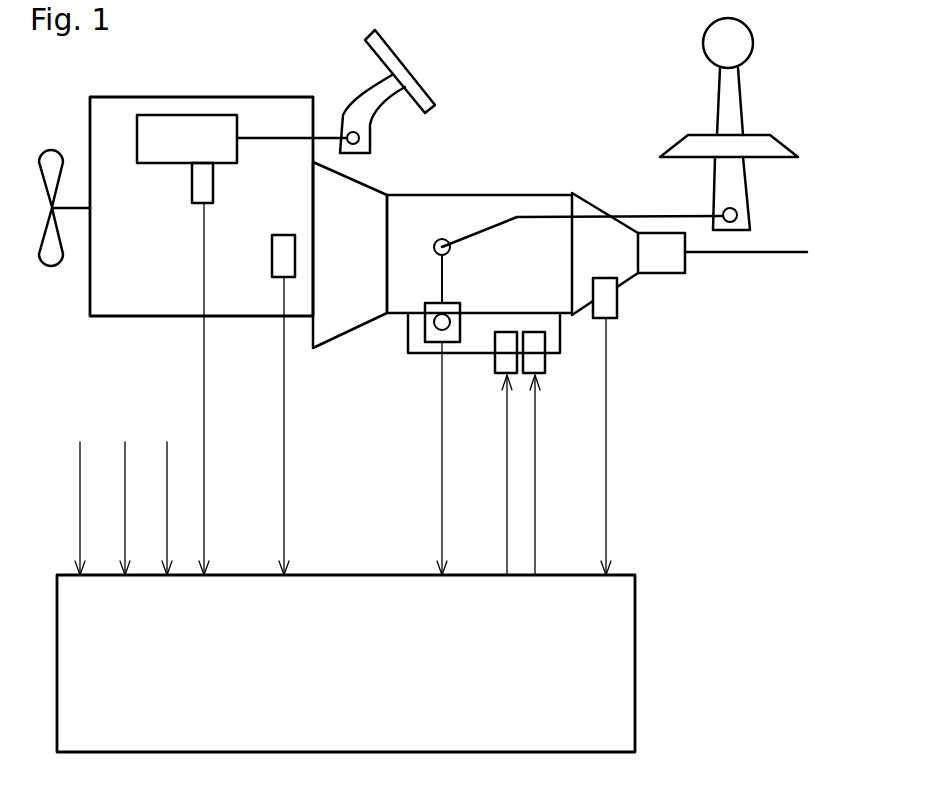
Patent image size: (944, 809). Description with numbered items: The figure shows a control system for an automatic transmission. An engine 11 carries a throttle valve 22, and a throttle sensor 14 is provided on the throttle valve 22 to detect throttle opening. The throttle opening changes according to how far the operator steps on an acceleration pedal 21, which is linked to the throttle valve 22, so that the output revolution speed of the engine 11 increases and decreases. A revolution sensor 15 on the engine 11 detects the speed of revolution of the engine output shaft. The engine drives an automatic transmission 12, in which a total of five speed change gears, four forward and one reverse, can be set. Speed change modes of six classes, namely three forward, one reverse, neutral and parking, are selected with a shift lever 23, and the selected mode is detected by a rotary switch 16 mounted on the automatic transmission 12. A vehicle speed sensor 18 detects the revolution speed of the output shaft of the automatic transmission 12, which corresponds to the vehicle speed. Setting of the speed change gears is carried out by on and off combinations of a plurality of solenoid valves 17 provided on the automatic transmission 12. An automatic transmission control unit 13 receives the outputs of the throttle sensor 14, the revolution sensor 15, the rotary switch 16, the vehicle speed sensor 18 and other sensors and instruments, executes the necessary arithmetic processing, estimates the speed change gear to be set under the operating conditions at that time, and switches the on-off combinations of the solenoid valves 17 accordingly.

The engine 11 is at (212, 97).
The automatic transmission 12 is at (519, 193).
The automatic transmission control unit 13 is at (360, 575).
The throttle sensor 14 is at (190, 182).
The revolution sensor 15 is at (272, 254).
The rotary switch 16 is at (460, 310).
The solenoid valves 17 is at (545, 365).
The vehicle speed sensor 18 is at (617, 297).
The acceleration pedal 21 is at (430, 88).
The throttle valve 22 is at (223, 166).
The shift lever 23 is at (718, 78).